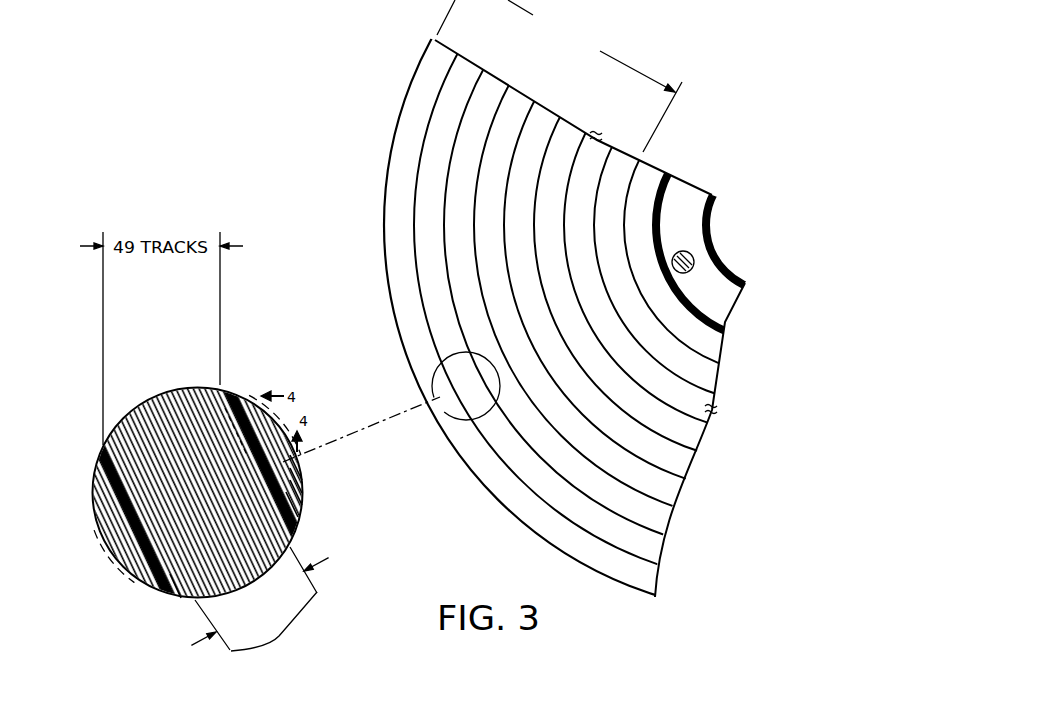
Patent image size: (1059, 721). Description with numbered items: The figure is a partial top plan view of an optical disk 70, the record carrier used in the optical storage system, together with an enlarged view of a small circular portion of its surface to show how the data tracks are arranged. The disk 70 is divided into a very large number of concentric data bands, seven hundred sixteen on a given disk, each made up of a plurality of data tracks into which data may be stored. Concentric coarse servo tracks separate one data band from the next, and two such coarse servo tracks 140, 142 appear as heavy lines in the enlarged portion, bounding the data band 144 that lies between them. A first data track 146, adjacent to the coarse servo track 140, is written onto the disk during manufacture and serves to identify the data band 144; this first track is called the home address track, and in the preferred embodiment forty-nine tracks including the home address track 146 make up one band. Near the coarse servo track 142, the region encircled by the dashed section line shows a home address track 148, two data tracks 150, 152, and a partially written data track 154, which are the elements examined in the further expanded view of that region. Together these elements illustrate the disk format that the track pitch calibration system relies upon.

The optical disk 70 is at (385, 188).
The coarse servo track 140 is at (659, 595).
The coarse servo track 142 is at (654, 527).
The data band 144 is at (654, 548).
The home address track 146 is at (181, 598).
The home address track 148 is at (298, 517).
The data track 150 is at (302, 505).
The data track 152 is at (302, 493).
The partially written data track 154 is at (302, 480).